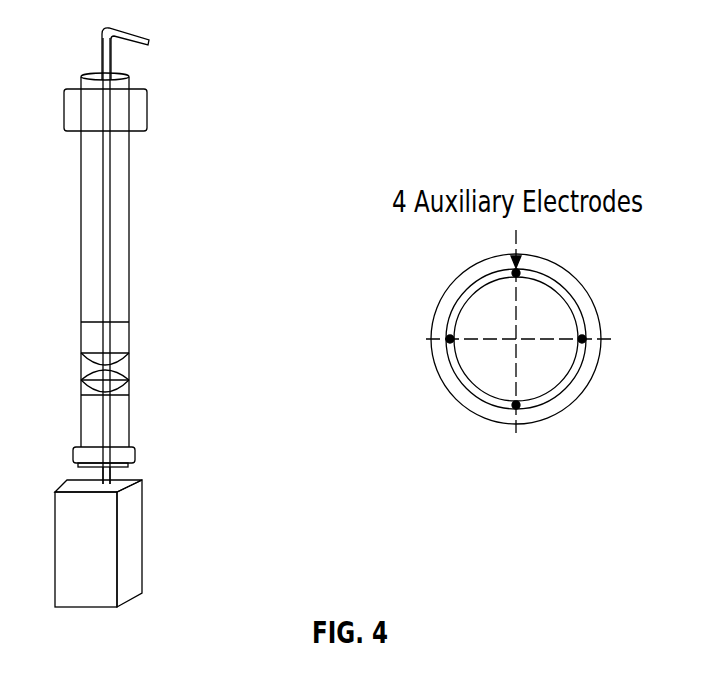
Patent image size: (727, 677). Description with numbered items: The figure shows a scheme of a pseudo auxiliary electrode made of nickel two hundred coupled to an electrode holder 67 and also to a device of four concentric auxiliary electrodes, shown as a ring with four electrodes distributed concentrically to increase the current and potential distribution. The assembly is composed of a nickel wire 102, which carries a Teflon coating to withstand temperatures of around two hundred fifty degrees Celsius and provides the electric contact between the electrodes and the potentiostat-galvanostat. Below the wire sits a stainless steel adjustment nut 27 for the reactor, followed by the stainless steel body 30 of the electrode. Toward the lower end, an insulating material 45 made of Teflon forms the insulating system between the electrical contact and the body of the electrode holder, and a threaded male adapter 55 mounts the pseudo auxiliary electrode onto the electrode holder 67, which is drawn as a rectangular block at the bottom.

The nickel wire 102 is at (149, 43).
The adjustment nut 27 is at (147, 113).
The pseudo auxiliary electrode body 30 is at (129, 233).
The insulating material 45 is at (135, 455).
The threaded male adapter 55 is at (112, 471).
The electrode holder 67 is at (142, 540).